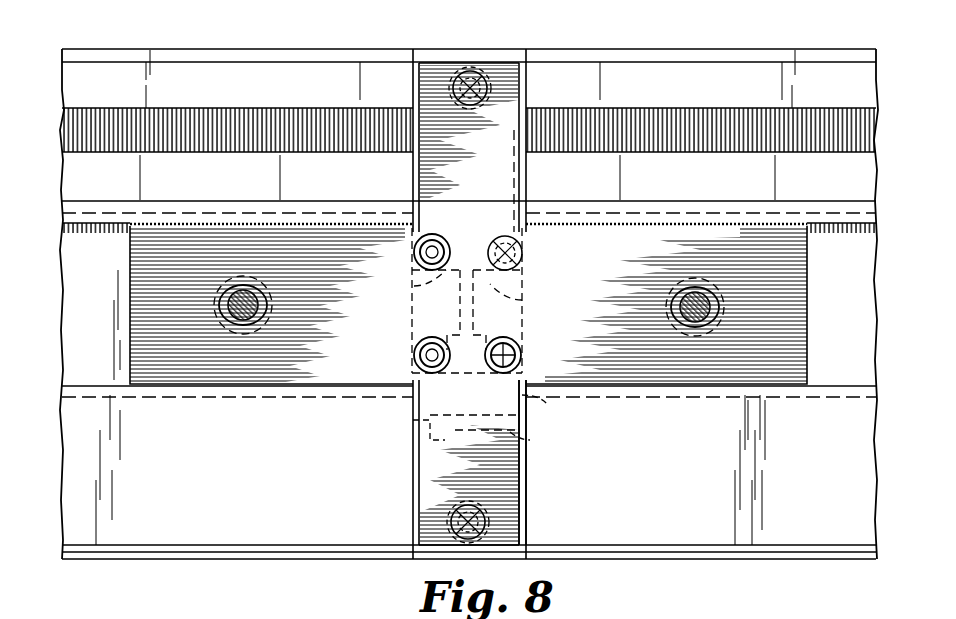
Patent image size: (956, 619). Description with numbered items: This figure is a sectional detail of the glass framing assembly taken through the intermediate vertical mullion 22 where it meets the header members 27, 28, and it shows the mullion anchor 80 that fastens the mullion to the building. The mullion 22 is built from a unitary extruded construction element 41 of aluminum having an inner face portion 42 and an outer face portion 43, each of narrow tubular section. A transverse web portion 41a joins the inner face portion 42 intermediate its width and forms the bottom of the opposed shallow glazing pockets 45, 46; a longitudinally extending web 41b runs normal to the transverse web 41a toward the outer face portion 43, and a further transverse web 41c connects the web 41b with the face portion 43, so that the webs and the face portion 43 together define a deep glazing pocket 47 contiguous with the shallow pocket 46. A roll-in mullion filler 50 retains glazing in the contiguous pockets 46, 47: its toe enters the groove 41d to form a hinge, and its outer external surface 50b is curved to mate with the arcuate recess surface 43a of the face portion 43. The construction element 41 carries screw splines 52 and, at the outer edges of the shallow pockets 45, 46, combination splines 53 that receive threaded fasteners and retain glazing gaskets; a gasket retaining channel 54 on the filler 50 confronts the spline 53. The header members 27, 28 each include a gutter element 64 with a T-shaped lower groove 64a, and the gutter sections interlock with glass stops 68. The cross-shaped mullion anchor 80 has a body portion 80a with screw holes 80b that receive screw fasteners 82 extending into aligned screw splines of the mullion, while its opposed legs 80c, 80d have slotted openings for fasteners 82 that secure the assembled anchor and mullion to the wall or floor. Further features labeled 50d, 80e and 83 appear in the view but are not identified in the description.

The vertical mullion 22 is at (446, 50).
The header member 27 is at (190, 548).
The header member 28 is at (690, 548).
The unitary extruded construction element 41 is at (523, 95).
The transverse web portion 41a is at (495, 302).
The longitudinally extending web 41b is at (440, 327).
The transversely extending web 41c is at (428, 406).
The longitudinally extending groove 41d is at (484, 300).
The inner face portion 42 is at (512, 54).
The outer face portion 43 is at (435, 560).
The recess surface 43a is at (530, 440).
The shallow glazing pocket 45 is at (414, 286).
The shallow glazing pocket 46 is at (524, 300).
The deep glazing pocket 47 is at (413, 430).
The mullion filler 50 is at (521, 413).
The outer external surface 50b is at (520, 412).
The plate tab 50d is at (548, 400).
The screw splines 52 is at (452, 88).
The splines 53 is at (445, 243).
The gasket retaining channel 54 is at (521, 347).
The gutter element 64 is at (205, 48).
The T-shaped lower groove 64a is at (88, 233).
The glass stops 68 is at (78, 562).
The mullion anchor 80 is at (692, 386).
The body portion 80a is at (520, 492).
The screw holes 80b is at (470, 106).
The leg 80c is at (213, 388).
The leg 80d is at (783, 387).
The grommet ring 80e is at (262, 322).
The screw fasteners 82 is at (471, 71).
The grommet core 83 is at (258, 304).